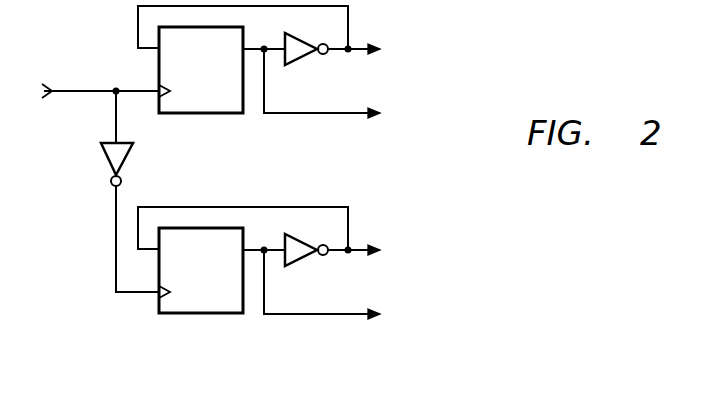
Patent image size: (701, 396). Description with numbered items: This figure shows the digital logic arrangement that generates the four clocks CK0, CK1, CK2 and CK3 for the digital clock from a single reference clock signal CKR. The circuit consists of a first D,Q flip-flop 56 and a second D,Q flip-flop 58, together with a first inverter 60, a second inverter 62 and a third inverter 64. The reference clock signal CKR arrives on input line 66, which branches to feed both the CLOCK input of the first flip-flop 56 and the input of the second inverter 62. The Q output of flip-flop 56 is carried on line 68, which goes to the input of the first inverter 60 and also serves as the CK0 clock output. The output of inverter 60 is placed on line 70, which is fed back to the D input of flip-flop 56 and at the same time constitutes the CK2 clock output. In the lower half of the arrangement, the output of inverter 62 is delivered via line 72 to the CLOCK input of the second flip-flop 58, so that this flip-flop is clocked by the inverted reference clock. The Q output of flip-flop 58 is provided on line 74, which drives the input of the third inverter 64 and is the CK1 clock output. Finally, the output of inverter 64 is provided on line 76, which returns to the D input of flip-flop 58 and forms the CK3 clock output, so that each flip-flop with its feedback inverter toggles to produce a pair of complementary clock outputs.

The first D,Q flip-flop 56 is at (202, 115).
The second D,Q flip-flop 58 is at (202, 315).
The first inverter 60 is at (307, 67).
The second inverter 62 is at (110, 163).
The third inverter 64 is at (307, 268).
The input line 66 is at (97, 95).
The line 68 is at (297, 115).
The line 70 is at (348, 30).
The line 72 is at (116, 240).
The line 74 is at (297, 316).
The line 76 is at (348, 230).